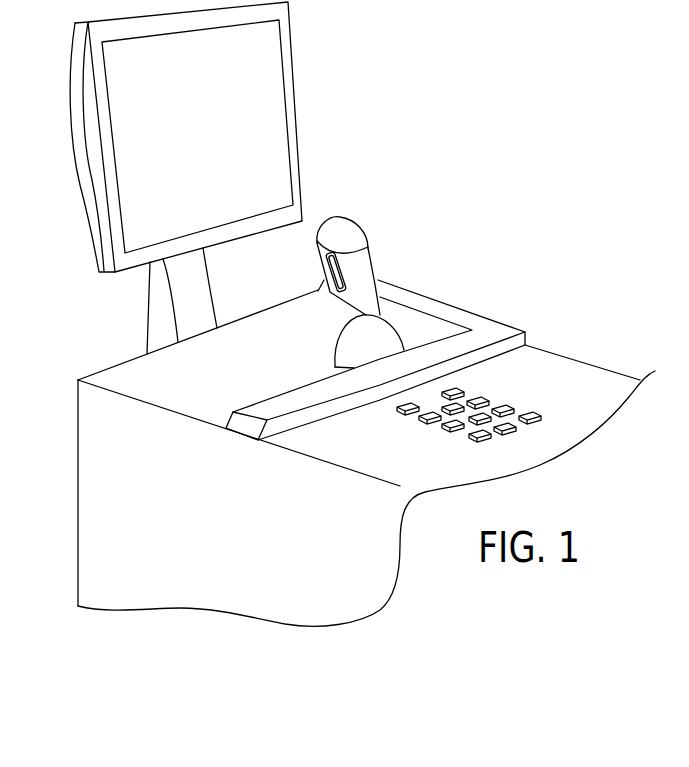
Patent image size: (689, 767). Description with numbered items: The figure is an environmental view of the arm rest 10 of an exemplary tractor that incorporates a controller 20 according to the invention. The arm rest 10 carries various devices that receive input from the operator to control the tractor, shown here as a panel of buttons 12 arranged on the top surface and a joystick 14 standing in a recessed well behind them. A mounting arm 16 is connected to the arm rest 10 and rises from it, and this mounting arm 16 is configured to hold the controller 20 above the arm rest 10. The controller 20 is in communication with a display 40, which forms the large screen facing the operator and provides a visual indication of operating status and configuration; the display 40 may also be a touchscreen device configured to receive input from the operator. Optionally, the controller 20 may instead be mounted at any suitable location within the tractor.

The arm rest 10 is at (550, 353).
The panel of buttons 12 is at (515, 394).
The joystick 14 is at (378, 261).
The mounting arm 16 is at (144, 310).
The controller 20 is at (293, 107).
The display 40 is at (272, 62).